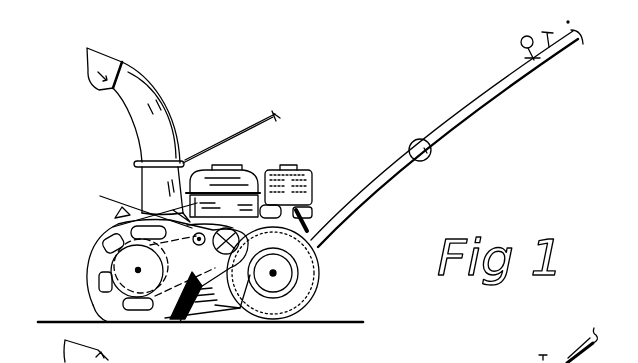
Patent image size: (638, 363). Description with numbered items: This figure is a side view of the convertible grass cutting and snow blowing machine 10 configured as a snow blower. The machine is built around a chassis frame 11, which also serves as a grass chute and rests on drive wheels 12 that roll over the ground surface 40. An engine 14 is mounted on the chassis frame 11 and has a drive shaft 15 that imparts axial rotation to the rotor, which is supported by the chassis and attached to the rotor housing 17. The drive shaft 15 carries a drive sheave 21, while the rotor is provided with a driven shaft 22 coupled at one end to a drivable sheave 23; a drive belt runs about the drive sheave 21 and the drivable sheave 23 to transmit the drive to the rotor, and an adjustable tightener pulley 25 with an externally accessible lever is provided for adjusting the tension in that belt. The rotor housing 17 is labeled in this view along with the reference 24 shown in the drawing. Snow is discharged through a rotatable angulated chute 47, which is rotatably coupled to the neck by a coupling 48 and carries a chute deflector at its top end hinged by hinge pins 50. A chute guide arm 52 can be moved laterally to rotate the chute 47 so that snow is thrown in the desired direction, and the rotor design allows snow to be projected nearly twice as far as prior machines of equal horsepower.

The convertible grass cutting and snow blowing machine 10 is at (352, 95).
The chassis frame 11 is at (228, 306).
The drive wheels 12 is at (322, 263).
The engine 14 is at (317, 173).
The drive shaft 15 is at (142, 205).
The rotor housing 17 is at (93, 242).
The drive sheave 21 is at (211, 272).
The driven shaft 22 is at (136, 271).
The drivable sheave 23 is at (90, 264).
The auger housing 24 is at (113, 223).
The adjustable tightener pulley 25 is at (160, 218).
The ground surface 40 is at (363, 322).
The rotatable angulated chute 47 is at (167, 99).
The coupling 48 is at (136, 159).
The hinge pins 50 is at (105, 352).
The chute guide arm 52 is at (277, 113).